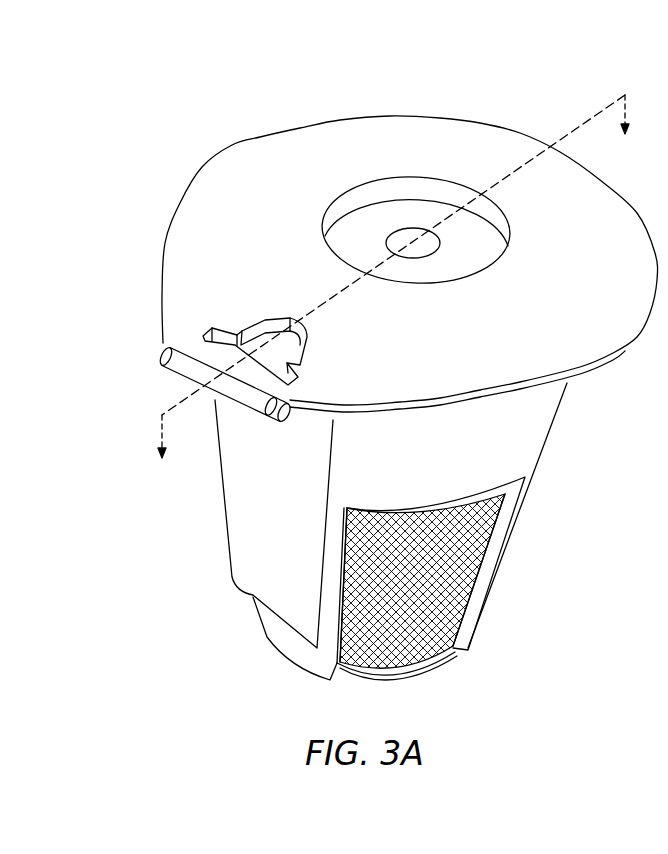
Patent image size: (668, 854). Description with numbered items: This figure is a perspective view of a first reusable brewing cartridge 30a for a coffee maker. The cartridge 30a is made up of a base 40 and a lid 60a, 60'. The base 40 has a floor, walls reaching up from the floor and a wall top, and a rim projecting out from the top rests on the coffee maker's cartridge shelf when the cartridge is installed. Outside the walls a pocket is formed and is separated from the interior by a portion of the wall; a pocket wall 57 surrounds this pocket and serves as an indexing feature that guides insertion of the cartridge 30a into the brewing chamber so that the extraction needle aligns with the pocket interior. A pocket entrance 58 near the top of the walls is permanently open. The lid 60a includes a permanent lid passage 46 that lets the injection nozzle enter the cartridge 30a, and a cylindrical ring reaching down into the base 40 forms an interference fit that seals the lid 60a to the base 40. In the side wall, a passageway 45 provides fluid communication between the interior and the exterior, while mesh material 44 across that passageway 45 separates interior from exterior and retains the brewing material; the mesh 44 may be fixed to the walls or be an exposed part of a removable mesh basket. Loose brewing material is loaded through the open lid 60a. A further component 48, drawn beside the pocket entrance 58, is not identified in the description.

The reusable brewing cartridge 30a is at (253, 77).
The base 40 is at (527, 427).
The mesh material 44 is at (420, 630).
The passageway 45 is at (493, 550).
The permanent lid passage 46 is at (406, 243).
The hinge pin 48 is at (190, 368).
The pocket wall 57 is at (290, 507).
The pocket entrance 58 is at (250, 327).
The lid 60a is at (278, 191).
The lid 60' is at (457, 367).